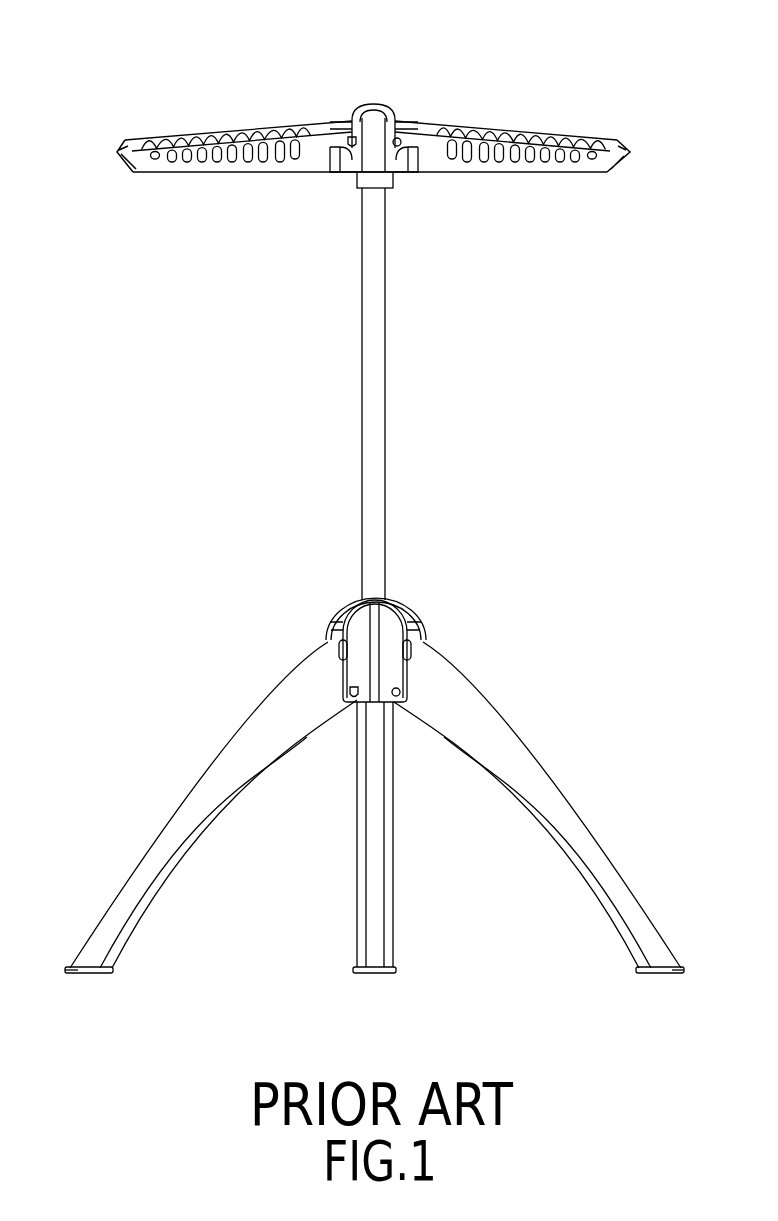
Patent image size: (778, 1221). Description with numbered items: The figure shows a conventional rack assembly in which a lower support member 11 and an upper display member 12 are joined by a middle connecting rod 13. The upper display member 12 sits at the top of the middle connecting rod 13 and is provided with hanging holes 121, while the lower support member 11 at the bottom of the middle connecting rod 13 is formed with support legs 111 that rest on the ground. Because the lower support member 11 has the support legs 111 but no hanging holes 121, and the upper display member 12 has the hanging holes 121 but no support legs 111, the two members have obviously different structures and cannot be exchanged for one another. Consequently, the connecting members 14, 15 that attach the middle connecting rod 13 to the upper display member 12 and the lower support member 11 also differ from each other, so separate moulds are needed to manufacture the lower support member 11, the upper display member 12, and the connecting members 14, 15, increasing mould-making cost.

The lower support member 11 is at (374, 800).
The support legs 111 is at (200, 803).
The upper display member 12 is at (373, 153).
The hanging holes 121 is at (548, 138).
The middle connecting rod 13 is at (375, 440).
The connecting member 14 is at (377, 105).
The connecting member 15 is at (417, 611).